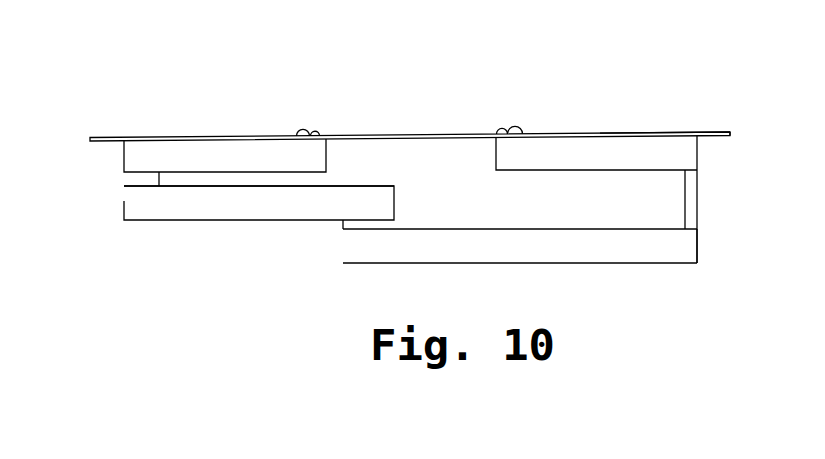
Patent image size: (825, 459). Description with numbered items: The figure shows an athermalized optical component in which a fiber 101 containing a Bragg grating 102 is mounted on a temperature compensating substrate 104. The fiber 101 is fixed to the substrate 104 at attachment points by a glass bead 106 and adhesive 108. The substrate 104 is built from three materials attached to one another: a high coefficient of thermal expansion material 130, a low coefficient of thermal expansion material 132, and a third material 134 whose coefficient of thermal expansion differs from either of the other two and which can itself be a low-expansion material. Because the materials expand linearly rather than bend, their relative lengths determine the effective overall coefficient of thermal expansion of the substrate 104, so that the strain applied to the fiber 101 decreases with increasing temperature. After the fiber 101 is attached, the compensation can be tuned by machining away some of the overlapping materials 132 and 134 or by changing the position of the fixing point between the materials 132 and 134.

The fiber 101 is at (613, 132).
The Bragg grating 102 is at (413, 134).
The temperature compensating substrate 104 is at (287, 238).
The glass bead 106 is at (313, 131).
The adhesive 108 is at (297, 130).
The high coefficient of thermal expansion material 130 is at (142, 150).
The low coefficient of thermal expansion material 132 is at (215, 200).
The third material 134 is at (605, 253).